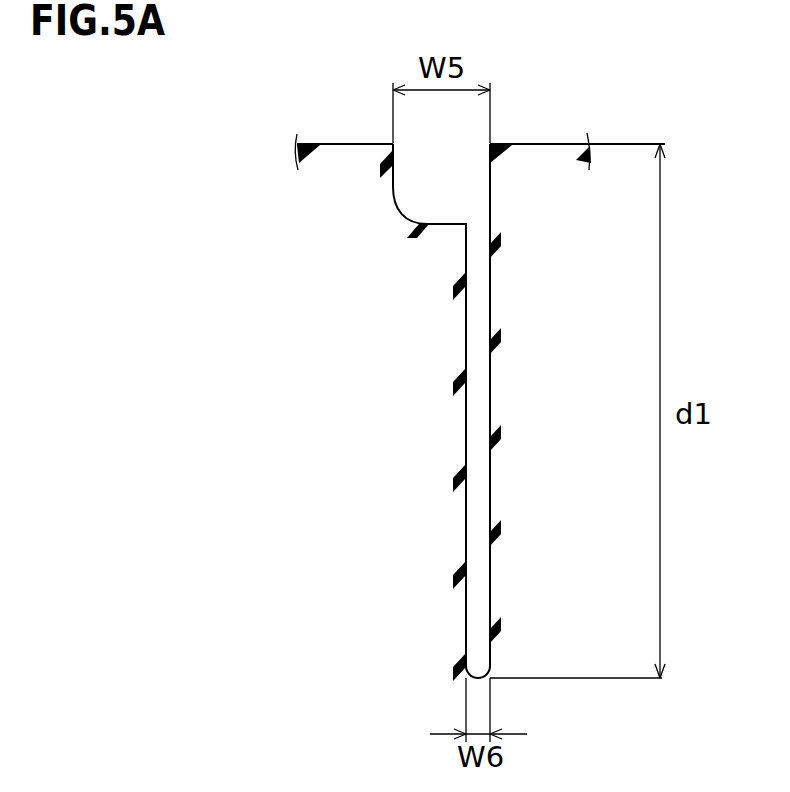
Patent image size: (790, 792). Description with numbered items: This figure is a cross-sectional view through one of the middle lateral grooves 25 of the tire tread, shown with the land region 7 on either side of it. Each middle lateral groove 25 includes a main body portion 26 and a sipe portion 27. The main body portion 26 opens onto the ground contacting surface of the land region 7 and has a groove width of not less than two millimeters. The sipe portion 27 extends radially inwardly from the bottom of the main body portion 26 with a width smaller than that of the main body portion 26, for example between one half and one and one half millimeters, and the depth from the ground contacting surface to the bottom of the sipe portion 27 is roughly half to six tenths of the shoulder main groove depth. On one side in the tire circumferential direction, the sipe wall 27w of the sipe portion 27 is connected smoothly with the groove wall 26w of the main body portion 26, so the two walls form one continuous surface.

The base plate 7 is at (343, 143).
The middle lateral groove 25 is at (256, 237).
The main body portion 26 is at (432, 199).
The sipe portion 27 is at (490, 345).
The groove wall 26w is at (490, 203).
The sipe wall 27w is at (490, 373).